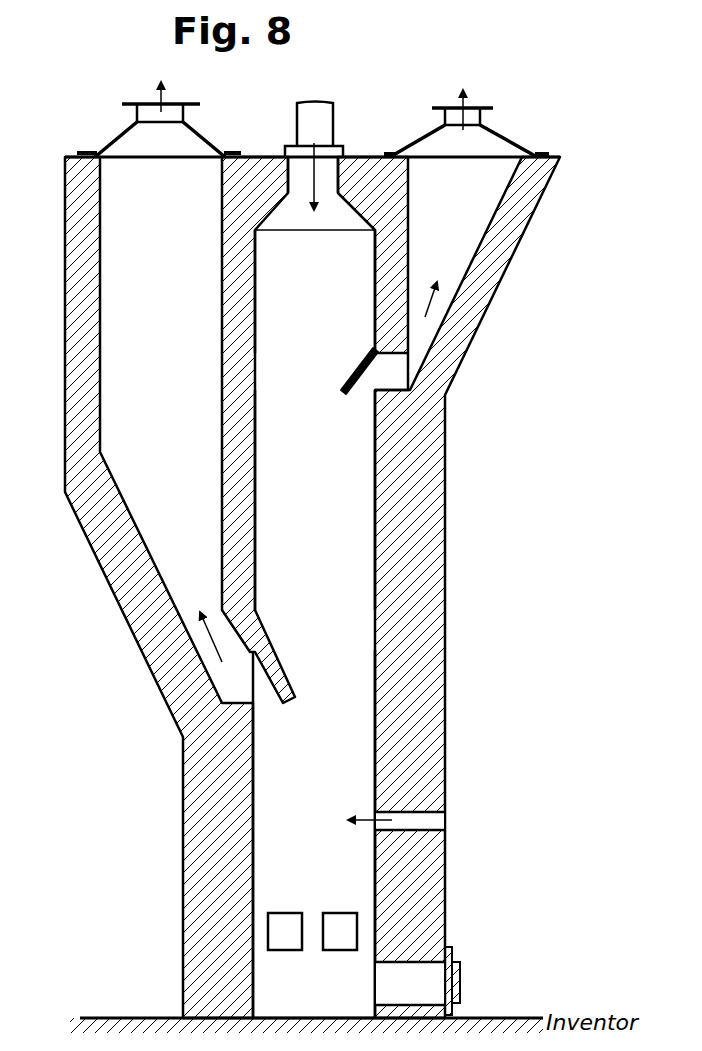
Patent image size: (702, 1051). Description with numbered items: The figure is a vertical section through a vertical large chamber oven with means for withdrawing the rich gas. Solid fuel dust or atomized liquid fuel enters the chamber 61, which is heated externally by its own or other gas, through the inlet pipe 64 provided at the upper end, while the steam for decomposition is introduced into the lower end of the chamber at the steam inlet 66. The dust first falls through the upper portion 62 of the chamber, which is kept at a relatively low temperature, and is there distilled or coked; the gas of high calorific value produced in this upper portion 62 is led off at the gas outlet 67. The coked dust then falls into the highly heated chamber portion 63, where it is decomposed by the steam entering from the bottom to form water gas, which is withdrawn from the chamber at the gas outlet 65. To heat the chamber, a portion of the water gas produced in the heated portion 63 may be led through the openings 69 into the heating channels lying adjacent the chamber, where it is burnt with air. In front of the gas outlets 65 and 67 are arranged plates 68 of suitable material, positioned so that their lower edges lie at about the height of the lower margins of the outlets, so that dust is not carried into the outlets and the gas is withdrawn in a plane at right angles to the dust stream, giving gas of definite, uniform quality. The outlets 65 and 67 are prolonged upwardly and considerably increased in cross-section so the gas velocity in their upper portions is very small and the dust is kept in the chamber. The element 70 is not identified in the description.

The chamber 61 is at (314, 834).
The upper portion of the chamber 62 is at (262, 304).
The highly heated chamber portion 63 is at (315, 500).
The inlet pipe 64 is at (317, 108).
The gas outlet 65 is at (159, 587).
The steam inlet 66 is at (388, 810).
The gas outlet 67 is at (467, 587).
The plate 68 is at (351, 374).
The openings 69 is at (333, 923).
The outlet pipe with flange 70 is at (425, 978).